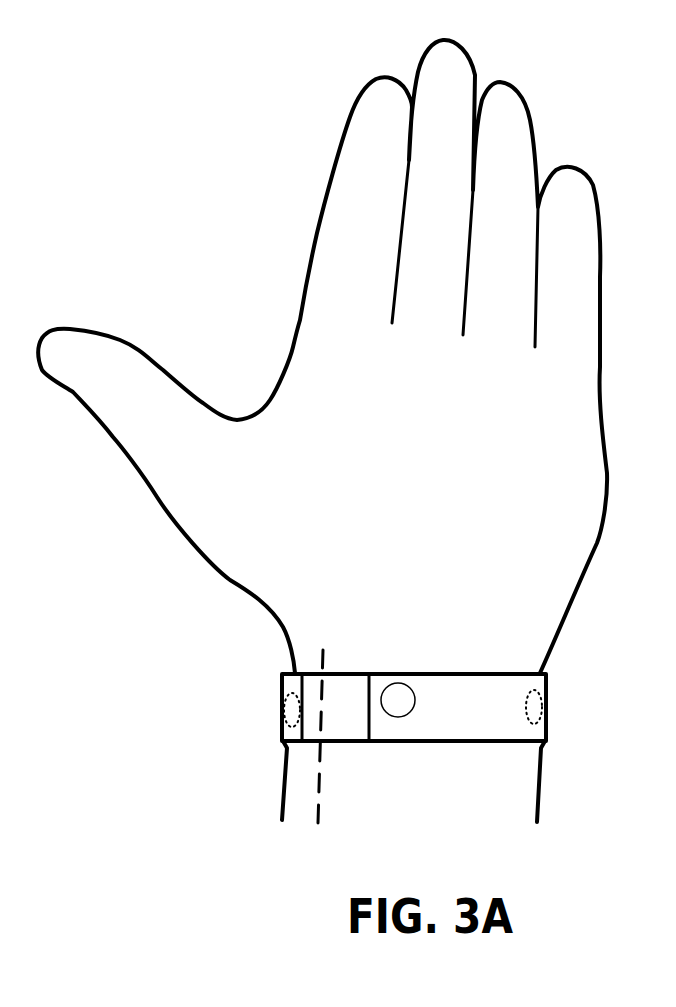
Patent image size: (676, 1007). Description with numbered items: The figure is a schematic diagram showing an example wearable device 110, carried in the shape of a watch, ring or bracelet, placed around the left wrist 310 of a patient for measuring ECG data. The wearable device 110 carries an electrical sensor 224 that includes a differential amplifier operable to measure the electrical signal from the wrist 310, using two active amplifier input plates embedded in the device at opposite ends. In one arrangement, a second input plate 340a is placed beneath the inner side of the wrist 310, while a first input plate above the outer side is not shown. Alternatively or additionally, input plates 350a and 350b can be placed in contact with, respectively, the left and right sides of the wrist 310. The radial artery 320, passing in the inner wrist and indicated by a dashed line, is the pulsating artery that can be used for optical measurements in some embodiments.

The wearable device 110 is at (495, 677).
The electrical sensor 224 is at (356, 725).
The wrist 310 is at (532, 803).
The radial artery 320 is at (320, 790).
The second input plate 340a is at (398, 690).
The input plate 350a is at (290, 713).
The input plate 350b is at (540, 705).